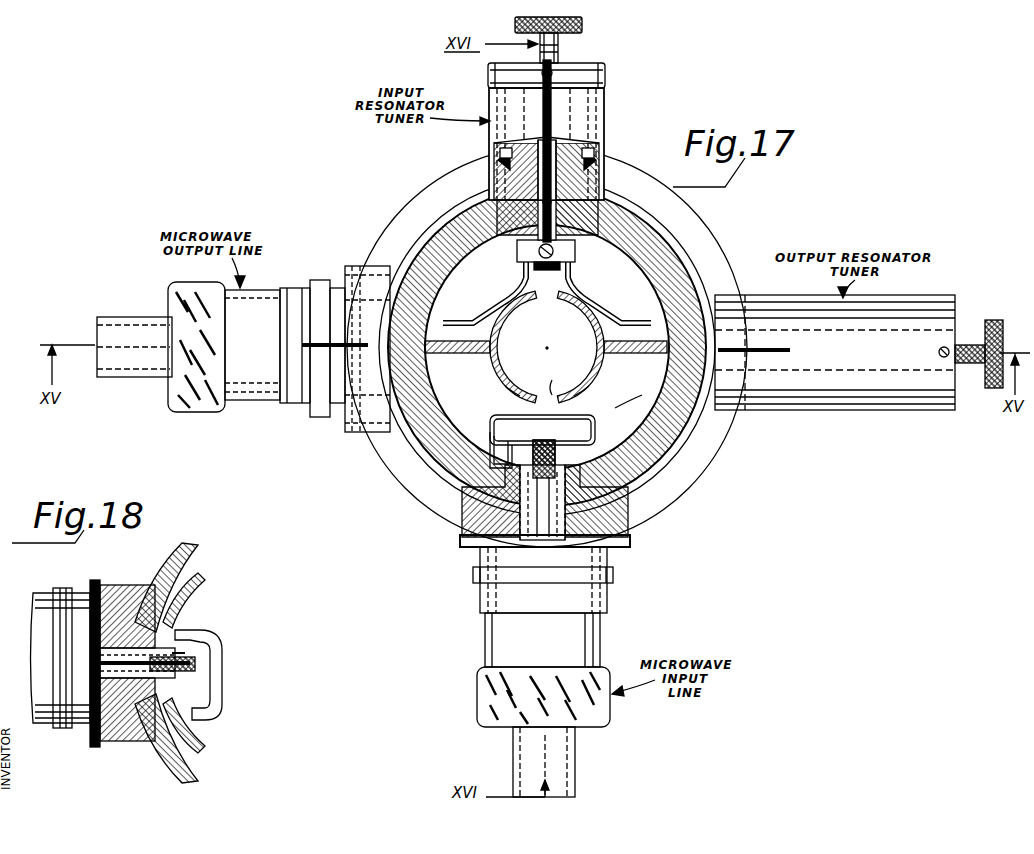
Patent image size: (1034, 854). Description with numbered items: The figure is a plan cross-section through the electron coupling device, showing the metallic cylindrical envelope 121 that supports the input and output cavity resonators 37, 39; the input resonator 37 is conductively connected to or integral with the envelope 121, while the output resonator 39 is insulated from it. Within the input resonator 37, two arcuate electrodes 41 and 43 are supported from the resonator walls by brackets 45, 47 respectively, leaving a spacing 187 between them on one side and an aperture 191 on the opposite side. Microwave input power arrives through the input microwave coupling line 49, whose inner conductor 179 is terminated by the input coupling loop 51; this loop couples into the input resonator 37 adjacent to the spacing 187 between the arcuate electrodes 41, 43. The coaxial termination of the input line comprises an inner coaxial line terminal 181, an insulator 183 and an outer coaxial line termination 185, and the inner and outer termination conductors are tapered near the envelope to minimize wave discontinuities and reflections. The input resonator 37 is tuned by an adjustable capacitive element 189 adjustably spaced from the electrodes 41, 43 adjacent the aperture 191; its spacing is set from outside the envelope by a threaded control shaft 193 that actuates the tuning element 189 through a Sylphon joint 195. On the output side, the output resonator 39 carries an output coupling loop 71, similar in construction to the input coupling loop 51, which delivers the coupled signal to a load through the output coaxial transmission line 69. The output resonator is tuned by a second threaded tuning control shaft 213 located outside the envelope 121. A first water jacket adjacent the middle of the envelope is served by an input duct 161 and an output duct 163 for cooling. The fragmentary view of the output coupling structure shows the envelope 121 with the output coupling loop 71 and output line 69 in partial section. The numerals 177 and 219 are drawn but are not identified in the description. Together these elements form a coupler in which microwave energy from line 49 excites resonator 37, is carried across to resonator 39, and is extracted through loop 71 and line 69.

In FIG. 17, the input cavity resonator 37 is at (628, 396).
In FIG. 17, the arcuate electrode 41 is at (503, 388).
In FIG. 17, the arcuate electrode 43 is at (586, 390).
In FIG. 17, the bracket 45 is at (472, 356).
In FIG. 17, the bracket 47 is at (628, 356).
In FIG. 17, the input microwave coupling line 49 is at (603, 643).
In FIG. 17, the input coupling loop 51 is at (500, 410).
In FIG. 17, the output coaxial transmission line 69 is at (290, 408).
In FIG. 18, the output coaxial transmission line 69 is at (48, 728).
In FIG. 18, the output coupling loop 71 is at (222, 672).
In FIG. 18, the output cavity resonator 39 is at (223, 749).
In FIG. 17, the envelope 121 is at (700, 452).
In FIG. 18, the envelope 121 is at (165, 580).
In FIG. 17, the input duct 161 is at (312, 343).
In FIG. 17, the output duct 163 is at (762, 348).
In FIG. 17, the loop stud 177 is at (560, 460).
In FIG. 17, the inner conductor 179 is at (405, 458).
In FIG. 17, the inner coaxial line terminal 181 is at (578, 758).
In FIG. 17, the insulator 183 is at (472, 682).
In FIG. 17, the outer coaxial line termination 185 is at (614, 576).
In FIG. 17, the spacing 187 is at (576, 400).
In FIG. 17, the adjustable capacitive element 189 is at (506, 297).
In FIG. 17, the aperture 191 is at (546, 300).
In FIG. 17, the threaded control shaft 193 is at (560, 42).
In FIG. 17, the Sylphon joint 195 is at (600, 188).
In FIG. 17, the second threaded tuning control shaft 213 is at (968, 344).
In FIG. 17, the output resonator tuner 219 is at (850, 428).